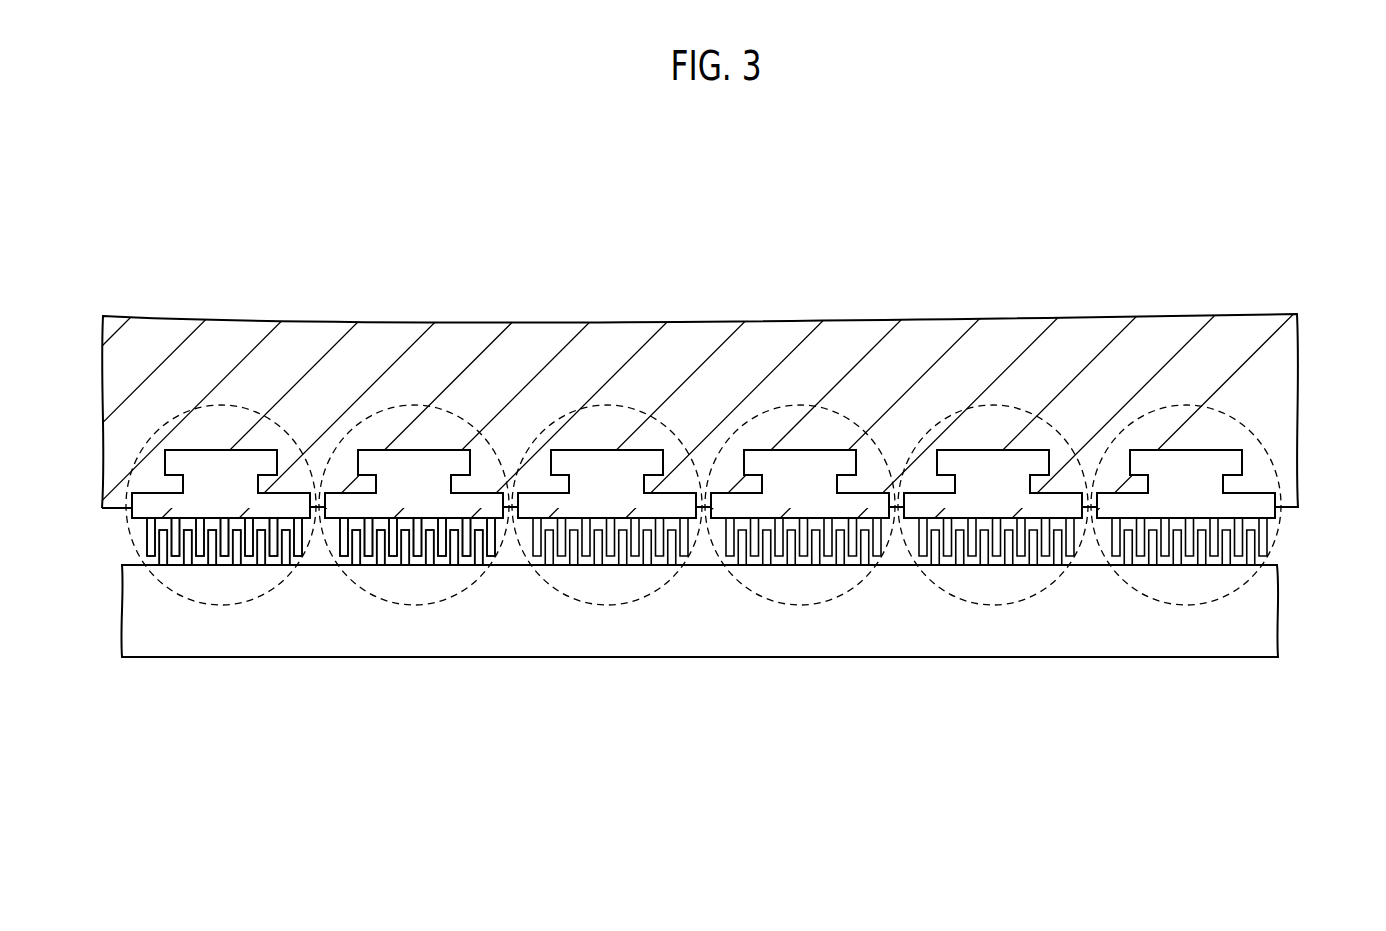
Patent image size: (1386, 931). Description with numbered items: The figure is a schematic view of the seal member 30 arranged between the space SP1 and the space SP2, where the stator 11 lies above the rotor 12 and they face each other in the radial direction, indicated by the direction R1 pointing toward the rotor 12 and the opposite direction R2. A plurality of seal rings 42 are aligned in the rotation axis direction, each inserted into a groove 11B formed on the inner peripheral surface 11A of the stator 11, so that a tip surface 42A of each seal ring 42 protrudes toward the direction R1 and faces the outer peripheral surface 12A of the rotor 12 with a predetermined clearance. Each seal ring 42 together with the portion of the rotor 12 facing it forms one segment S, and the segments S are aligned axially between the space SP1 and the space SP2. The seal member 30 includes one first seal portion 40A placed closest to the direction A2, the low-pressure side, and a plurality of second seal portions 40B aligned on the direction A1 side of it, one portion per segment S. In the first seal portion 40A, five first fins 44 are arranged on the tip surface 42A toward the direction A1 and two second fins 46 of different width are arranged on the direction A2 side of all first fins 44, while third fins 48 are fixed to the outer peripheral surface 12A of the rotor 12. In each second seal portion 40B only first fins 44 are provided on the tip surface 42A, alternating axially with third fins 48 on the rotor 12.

The seal member 30 is at (1282, 217).
The stator 11 is at (1278, 383).
The inner peripheral surface 11A is at (100, 516).
The groove 11B is at (212, 460).
The rotor 12 is at (1174, 632).
The outer peripheral surface 12A is at (1086, 567).
The first seal portion 40A is at (222, 395).
The second seal portion 40B is at (415, 395).
The seal ring 42 is at (266, 431).
The tip surface 42A is at (312, 497).
The first fin 44 is at (293, 575).
The second fin 46 is at (172, 575).
The third fin 48 is at (146, 542).
The segment S is at (239, 406).
The space SP1 is at (1287, 531).
The space SP2 is at (115, 531).
The direction R1 is at (1300, 560).
The direction R2 is at (1346, 571).
The direction A1 is at (1122, 770).
The direction A2 is at (1133, 811).